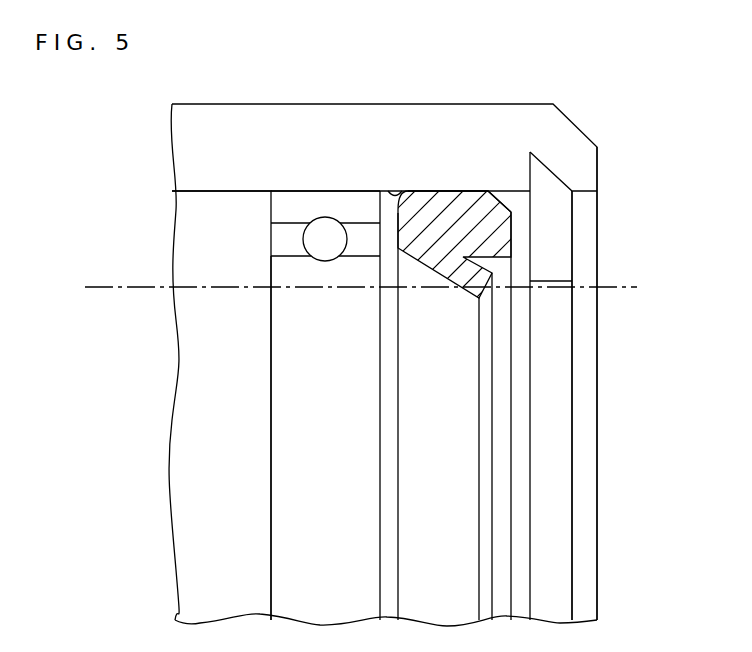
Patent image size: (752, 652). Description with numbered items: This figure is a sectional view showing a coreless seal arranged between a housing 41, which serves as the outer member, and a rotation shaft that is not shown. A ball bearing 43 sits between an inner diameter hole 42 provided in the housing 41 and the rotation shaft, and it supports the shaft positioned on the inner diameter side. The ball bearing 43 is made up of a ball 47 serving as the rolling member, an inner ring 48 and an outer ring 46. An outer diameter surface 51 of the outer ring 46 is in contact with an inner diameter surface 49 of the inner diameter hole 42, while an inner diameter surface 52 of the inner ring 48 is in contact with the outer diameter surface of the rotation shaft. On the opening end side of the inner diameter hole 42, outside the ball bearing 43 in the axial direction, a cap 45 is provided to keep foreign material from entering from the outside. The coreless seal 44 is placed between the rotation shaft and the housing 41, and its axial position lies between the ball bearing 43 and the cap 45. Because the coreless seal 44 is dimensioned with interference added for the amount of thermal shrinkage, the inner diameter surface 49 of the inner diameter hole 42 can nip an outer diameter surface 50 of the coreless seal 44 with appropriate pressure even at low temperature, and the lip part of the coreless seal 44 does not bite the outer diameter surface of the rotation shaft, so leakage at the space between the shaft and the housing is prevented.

The housing 41 is at (327, 125).
The inner diameter hole 42 is at (587, 417).
The ball bearing 43 is at (229, 233).
The coreless seal 44 is at (444, 220).
The cap 45 is at (555, 233).
The outer ring 46 is at (285, 207).
The ball 47 is at (308, 239).
The inner ring 48 is at (285, 270).
The inner diameter surface 49 is at (402, 190).
The outer diameter surface 50 is at (470, 190).
The outer diameter surface 51 is at (293, 190).
The inner diameter surface 52 is at (293, 288).